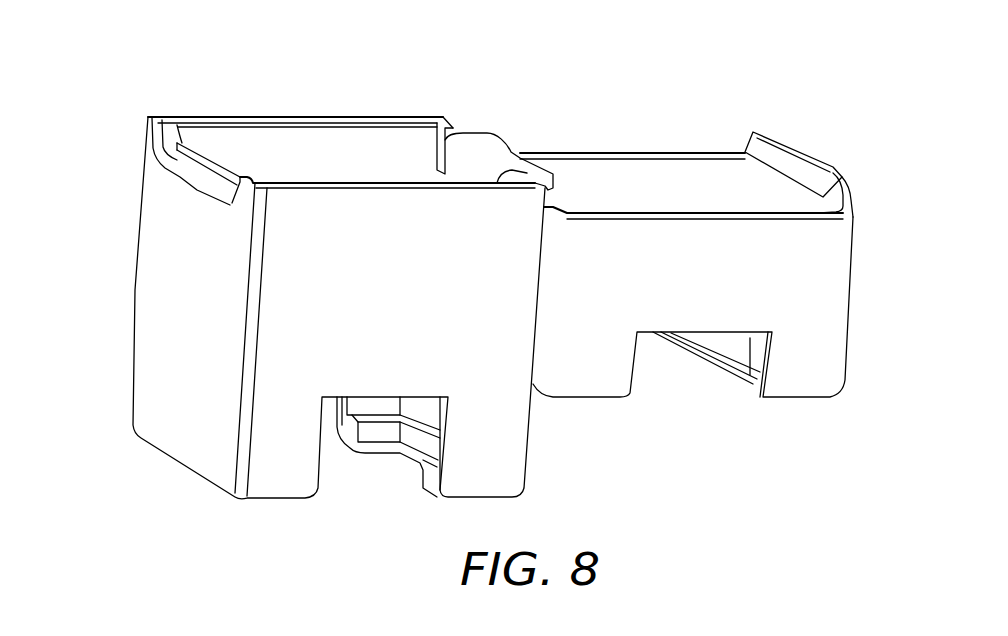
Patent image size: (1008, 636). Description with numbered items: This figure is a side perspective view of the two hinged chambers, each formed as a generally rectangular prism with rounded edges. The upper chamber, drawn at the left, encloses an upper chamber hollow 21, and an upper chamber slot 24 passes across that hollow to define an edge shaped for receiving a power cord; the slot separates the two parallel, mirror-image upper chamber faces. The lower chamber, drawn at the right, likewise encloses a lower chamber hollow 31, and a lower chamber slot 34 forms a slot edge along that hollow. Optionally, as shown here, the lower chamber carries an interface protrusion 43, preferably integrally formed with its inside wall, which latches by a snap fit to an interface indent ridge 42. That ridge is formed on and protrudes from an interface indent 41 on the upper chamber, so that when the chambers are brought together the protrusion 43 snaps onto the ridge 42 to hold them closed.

The upper chamber hollow 21 is at (388, 150).
The upper chamber slot 24 is at (352, 472).
The lower chamber hollow 31 is at (630, 172).
The lower chamber slot 34 is at (673, 370).
The interface indent 41 is at (182, 185).
The interface indent ridge 42 is at (213, 157).
The interface protrusion 43 is at (805, 150).